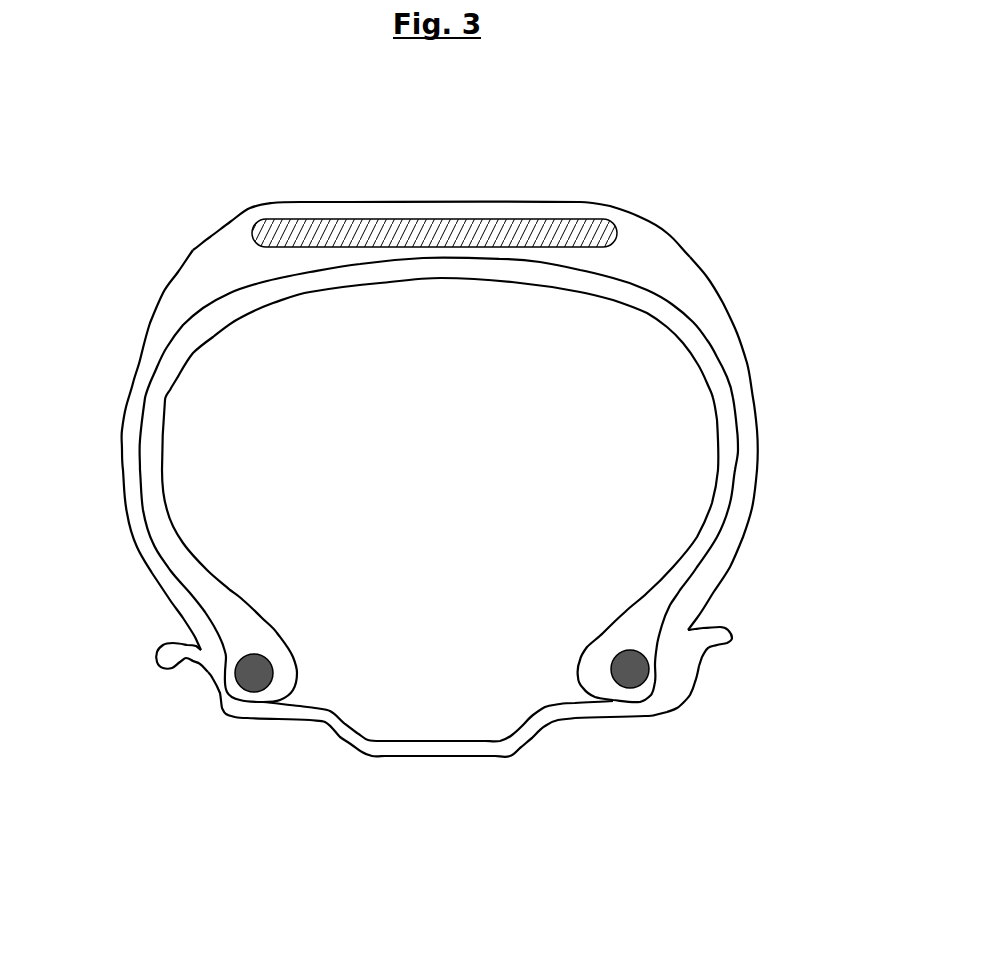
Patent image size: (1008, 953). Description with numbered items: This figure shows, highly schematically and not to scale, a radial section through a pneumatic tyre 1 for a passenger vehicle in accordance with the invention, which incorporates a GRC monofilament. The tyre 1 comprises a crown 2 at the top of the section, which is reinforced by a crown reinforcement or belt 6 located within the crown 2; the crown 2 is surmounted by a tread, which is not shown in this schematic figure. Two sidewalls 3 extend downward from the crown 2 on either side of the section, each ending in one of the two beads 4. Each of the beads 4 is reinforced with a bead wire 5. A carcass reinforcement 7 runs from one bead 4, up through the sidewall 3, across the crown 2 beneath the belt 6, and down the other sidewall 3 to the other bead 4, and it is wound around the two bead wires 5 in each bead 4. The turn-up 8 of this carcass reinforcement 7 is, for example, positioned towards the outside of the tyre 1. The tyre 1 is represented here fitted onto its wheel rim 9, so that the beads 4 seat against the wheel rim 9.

The tyre 1 is at (784, 373).
The crown 2 is at (534, 210).
The sidewall 3 is at (130, 446).
The bead 4 is at (281, 698).
The bead wire 5 is at (256, 672).
The crown reinforcement or belt 6 is at (430, 219).
The carcass reinforcement 7 is at (162, 360).
The turn-up 8 is at (223, 650).
The wheel rim 9 is at (208, 685).